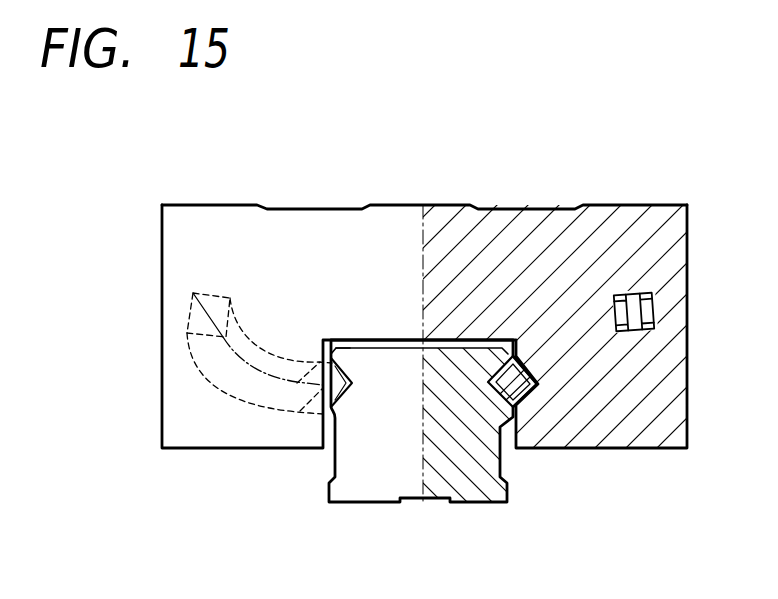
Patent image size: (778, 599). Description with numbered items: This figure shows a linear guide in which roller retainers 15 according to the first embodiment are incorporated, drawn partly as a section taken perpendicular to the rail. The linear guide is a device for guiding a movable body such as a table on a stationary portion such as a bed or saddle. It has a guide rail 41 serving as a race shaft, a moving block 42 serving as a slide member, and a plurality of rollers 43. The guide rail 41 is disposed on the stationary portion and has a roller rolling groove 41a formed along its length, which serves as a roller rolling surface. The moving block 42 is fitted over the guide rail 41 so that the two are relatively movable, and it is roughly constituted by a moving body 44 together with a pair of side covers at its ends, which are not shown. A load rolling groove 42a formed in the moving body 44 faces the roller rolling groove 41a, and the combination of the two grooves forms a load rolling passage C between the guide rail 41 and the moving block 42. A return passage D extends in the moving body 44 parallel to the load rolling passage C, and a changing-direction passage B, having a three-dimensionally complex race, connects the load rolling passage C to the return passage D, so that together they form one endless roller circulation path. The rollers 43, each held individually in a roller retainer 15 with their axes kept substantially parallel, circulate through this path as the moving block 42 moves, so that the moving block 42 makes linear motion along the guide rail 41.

The roller retainer 15 is at (480, 348).
The guide rail 41 is at (378, 487).
The roller rolling groove 41a is at (333, 390).
The moving block 42 is at (487, 217).
The load rolling groove 42a is at (517, 353).
The roller 43 is at (532, 383).
The moving body 44 is at (400, 214).
The changing-direction passage B is at (257, 357).
The load rolling passage C is at (337, 352).
The return passage D is at (214, 292).